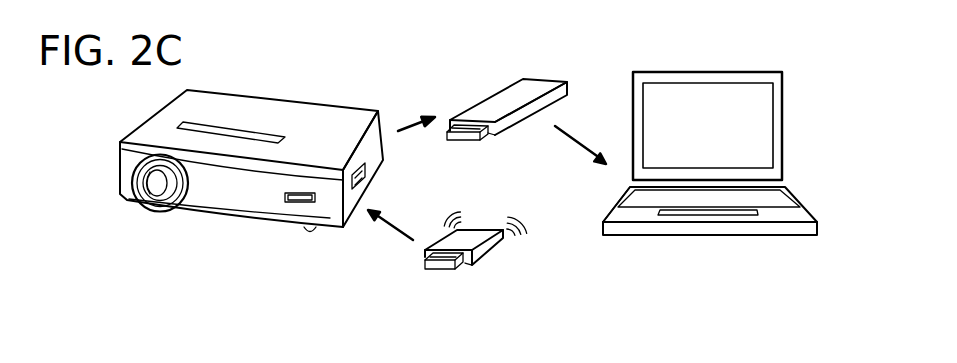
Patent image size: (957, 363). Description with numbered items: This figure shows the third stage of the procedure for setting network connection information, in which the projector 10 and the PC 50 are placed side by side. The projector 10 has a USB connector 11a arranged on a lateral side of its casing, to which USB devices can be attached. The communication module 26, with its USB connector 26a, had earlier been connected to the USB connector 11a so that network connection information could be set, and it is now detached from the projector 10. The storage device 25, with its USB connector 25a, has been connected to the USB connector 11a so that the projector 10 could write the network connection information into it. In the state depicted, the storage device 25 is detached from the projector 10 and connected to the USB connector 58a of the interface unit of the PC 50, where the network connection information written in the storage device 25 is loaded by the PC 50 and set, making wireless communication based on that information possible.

The projector 10 is at (333, 103).
The USB connector 11a is at (380, 165).
The storage device 25 is at (553, 78).
The USB connector 25a is at (465, 138).
The communication module 26 is at (487, 247).
The USB connector 26a is at (437, 265).
The PC 50 is at (790, 193).
The USB connector 58a is at (622, 198).